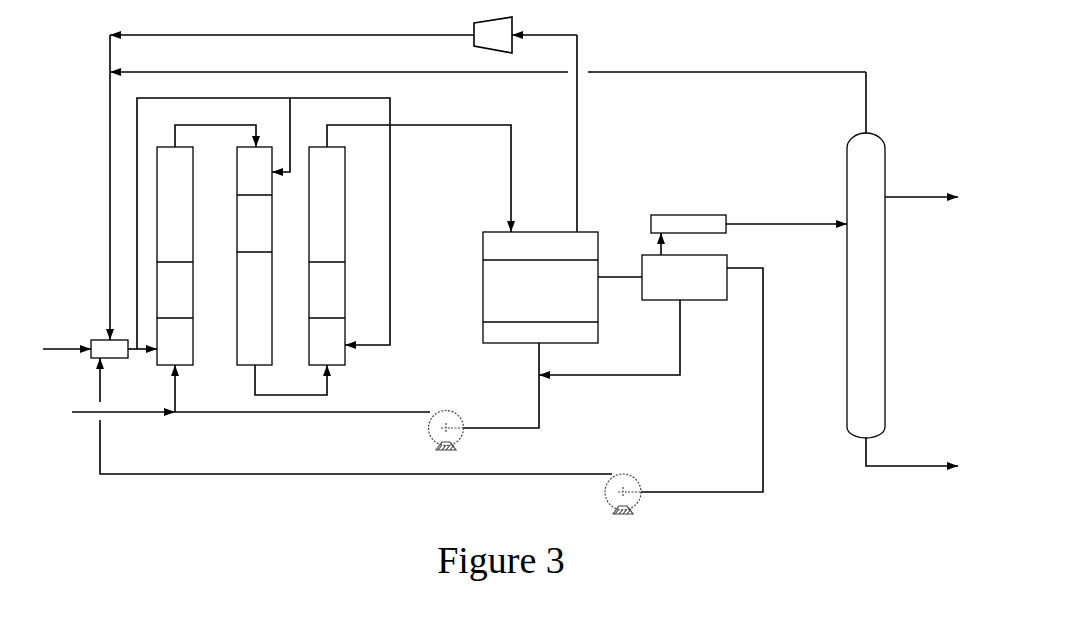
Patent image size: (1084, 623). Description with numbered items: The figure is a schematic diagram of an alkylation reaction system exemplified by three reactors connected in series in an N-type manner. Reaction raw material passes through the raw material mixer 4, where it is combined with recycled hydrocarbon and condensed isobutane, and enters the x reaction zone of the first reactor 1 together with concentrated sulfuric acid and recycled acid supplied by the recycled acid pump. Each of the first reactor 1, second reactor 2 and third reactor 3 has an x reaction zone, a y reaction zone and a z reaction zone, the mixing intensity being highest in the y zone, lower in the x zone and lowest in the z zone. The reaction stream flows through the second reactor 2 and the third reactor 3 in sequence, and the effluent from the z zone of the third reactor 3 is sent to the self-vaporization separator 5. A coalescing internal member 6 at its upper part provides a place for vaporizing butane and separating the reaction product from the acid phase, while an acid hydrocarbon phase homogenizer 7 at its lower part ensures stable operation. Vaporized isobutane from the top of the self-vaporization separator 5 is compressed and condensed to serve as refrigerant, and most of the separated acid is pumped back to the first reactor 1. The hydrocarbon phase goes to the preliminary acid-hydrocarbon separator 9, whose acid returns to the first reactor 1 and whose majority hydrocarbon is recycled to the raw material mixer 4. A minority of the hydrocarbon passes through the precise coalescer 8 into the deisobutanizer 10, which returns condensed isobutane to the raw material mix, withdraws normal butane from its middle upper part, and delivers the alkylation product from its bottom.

The first reactor 1 is at (175, 242).
The second reactor 2 is at (255, 287).
The third reactor 3 is at (323, 242).
The raw material mixer 4 is at (100, 345).
The self-vaporization separator 5 is at (502, 296).
The coalescing internal member 6 is at (530, 252).
The acid hydrocarbon phase homogenizer 7 is at (567, 330).
The precise coalescer 8 is at (670, 223).
The preliminary acid-hydrocarbon separator 9 is at (697, 287).
The deisobutanizer 10 is at (866, 187).